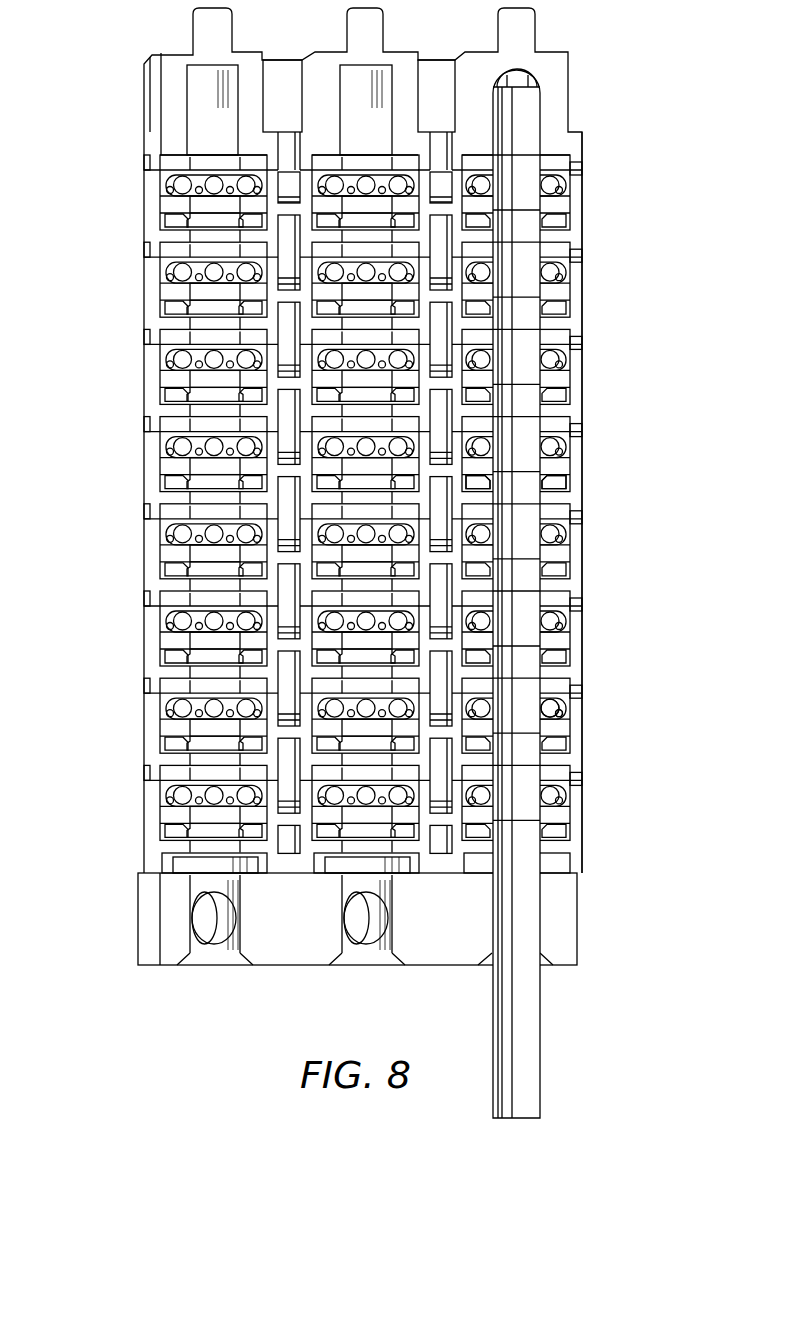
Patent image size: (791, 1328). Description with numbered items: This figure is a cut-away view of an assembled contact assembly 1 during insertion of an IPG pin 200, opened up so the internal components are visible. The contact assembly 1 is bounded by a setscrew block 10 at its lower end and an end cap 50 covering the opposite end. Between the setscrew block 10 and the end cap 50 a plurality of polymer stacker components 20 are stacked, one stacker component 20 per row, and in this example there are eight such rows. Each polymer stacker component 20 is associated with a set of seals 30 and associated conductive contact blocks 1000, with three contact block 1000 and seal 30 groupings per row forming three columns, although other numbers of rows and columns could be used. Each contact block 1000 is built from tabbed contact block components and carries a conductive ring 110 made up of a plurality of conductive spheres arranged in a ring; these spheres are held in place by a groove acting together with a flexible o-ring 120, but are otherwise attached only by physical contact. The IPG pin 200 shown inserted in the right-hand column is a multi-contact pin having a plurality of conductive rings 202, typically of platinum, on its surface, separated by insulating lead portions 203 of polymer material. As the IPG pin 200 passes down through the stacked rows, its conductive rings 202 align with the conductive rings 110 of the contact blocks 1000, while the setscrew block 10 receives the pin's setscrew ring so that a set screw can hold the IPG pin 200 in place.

The contact assembly 1 is at (112, 62).
The setscrew block 10 is at (577, 922).
The polymer stacker component 20 is at (582, 375).
The seal 30 is at (565, 473).
The end cap 50 is at (560, 83).
The conductive ring 110 is at (553, 697).
The flexible o-ring 120 is at (567, 713).
The IPG pin 200 is at (540, 1008).
The conductive ring of the IPG pin 202 is at (530, 252).
The insulating lead portion 203 is at (530, 322).
The contact block 1000 is at (565, 547).